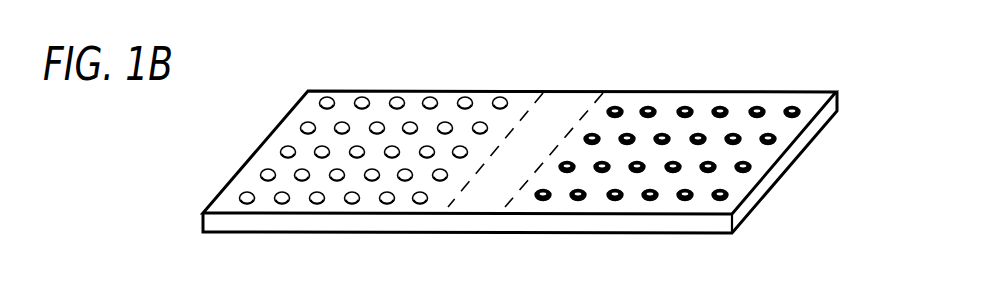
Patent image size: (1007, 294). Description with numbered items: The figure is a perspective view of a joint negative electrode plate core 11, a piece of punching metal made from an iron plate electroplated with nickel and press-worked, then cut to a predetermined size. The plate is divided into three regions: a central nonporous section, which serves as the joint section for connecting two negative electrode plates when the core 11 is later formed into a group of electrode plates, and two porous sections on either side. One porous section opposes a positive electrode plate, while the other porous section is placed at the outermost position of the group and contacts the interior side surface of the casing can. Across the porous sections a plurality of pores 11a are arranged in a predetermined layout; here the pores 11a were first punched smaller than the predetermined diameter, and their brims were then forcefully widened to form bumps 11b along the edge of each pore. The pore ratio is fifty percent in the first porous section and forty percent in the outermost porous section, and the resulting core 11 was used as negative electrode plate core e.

The joint negative electrode plate core 11 is at (520, 137).
The pores 11a is at (395, 103).
The bumps 11b is at (615, 108).